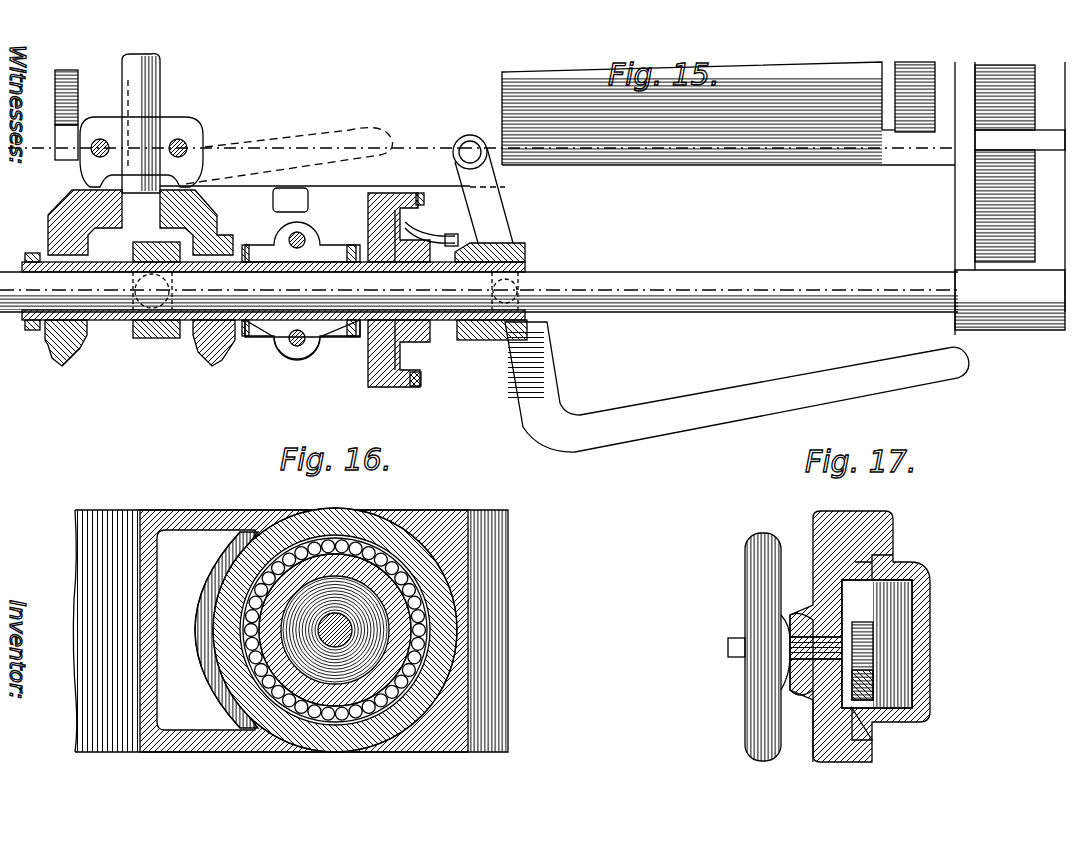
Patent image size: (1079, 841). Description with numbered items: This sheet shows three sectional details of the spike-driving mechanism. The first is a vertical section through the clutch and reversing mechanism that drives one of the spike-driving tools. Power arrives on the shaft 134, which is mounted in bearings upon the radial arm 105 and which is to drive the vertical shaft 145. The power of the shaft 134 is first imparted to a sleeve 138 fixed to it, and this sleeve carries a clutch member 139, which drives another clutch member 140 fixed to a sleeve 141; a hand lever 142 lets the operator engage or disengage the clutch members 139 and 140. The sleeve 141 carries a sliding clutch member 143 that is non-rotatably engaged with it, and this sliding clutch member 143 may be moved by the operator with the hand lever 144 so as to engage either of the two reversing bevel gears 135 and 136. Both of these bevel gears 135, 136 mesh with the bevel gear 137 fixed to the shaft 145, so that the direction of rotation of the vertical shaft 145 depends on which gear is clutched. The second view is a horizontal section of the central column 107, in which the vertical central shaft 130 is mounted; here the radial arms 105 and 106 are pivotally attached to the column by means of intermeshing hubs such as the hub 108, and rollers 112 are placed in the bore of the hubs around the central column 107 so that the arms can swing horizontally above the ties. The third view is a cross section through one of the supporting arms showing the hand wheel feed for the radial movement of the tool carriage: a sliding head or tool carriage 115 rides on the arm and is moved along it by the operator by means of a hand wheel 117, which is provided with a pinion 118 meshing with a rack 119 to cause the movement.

In FIG. 15, the radial arm 105 is at (672, 158).
In FIG. 16, the radial arm 105 is at (510, 678).
In FIG. 16, the radial arm 106 is at (88, 512).
In FIG. 16, the central column 107 is at (410, 618).
In FIG. 16, the hub 108 is at (270, 528).
In FIG. 16, the rollers 112 is at (362, 548).
In FIG. 15, the tool carriage 115 is at (273, 196).
In FIG. 17, the tool carriage 115 is at (893, 528).
In FIG. 17, the hand wheel 117 is at (748, 560).
In FIG. 17, the pinion 118 is at (868, 632).
In FIG. 17, the rack 119 is at (870, 688).
In FIG. 16, the vertical central shaft 130 is at (333, 634).
In FIG. 15, the shaft 134 is at (655, 275).
In FIG. 15, the bevel gear 135 is at (62, 355).
In FIG. 15, the bevel gear 136 is at (213, 360).
In FIG. 15, the bevel gear 137 is at (215, 178).
In FIG. 15, the sleeve 138 is at (488, 330).
In FIG. 15, the clutch member 139 is at (413, 386).
In FIG. 15, the clutch member 140 is at (372, 380).
In FIG. 15, the sleeve 141 is at (293, 332).
In FIG. 15, the hand lever 142 is at (737, 387).
In FIG. 15, the sliding clutch member 143 is at (160, 338).
In FIG. 15, the hand lever 144 is at (362, 128).
In FIG. 15, the vertical shaft 145 is at (160, 85).